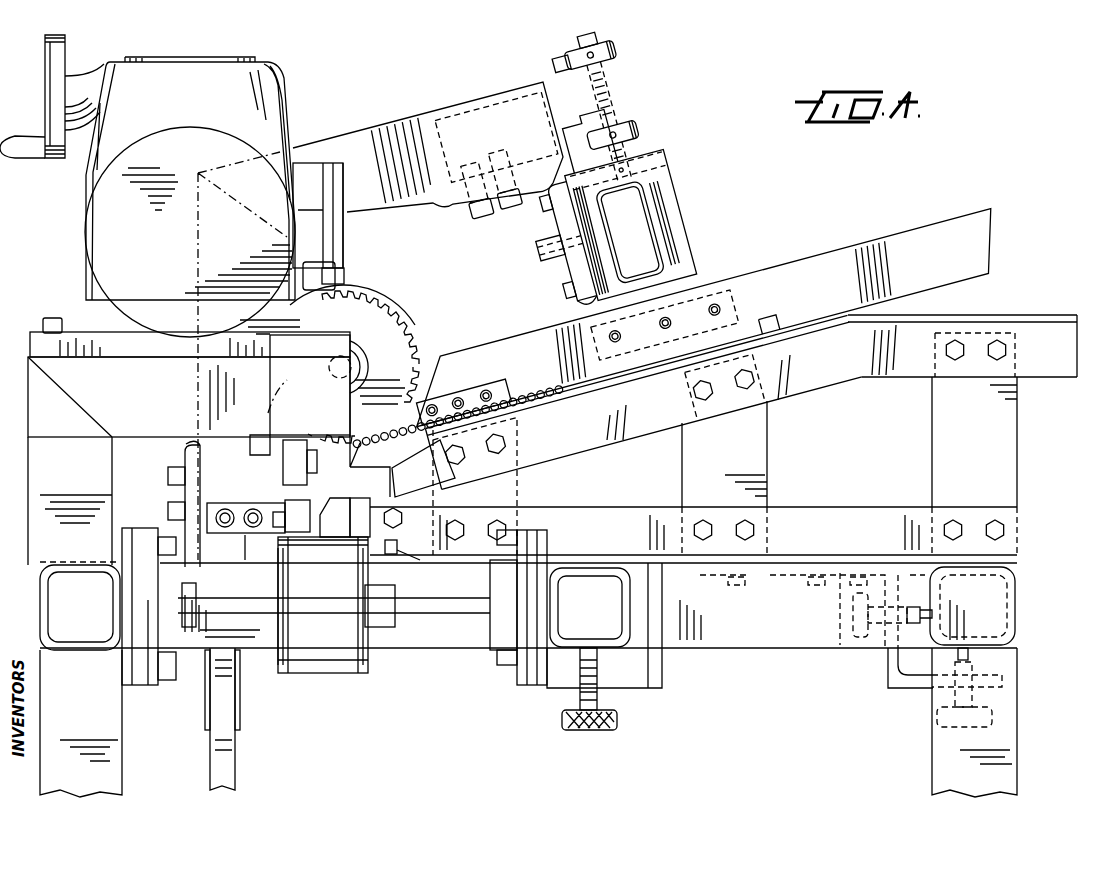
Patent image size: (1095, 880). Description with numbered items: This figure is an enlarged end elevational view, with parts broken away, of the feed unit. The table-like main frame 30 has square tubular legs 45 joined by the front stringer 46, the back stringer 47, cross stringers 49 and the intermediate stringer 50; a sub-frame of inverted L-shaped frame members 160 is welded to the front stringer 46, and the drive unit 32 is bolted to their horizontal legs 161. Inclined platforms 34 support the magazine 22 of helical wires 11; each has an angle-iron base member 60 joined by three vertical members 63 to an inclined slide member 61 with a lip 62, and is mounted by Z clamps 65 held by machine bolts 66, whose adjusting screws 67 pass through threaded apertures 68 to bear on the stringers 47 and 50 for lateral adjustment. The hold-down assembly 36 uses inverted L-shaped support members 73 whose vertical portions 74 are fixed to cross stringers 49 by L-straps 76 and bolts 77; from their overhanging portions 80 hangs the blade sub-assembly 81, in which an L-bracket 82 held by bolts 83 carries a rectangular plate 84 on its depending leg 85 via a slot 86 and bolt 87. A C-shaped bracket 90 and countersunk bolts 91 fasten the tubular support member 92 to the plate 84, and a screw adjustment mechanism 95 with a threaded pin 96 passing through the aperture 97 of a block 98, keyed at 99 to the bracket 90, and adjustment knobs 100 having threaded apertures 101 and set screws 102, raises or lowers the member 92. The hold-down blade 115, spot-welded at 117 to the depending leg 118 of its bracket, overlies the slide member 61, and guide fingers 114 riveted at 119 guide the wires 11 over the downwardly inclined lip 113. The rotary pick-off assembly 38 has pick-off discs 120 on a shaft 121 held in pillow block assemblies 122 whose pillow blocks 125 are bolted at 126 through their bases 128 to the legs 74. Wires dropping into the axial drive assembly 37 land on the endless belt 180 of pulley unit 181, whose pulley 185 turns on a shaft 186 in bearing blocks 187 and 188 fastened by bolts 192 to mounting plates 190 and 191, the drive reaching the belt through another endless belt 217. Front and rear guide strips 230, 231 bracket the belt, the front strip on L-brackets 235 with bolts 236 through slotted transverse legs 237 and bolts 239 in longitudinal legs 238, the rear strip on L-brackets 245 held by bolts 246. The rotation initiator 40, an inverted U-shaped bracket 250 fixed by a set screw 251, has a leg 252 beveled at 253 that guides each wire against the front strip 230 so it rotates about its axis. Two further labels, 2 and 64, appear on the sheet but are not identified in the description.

The boss 2 is at (40, 320).
The helical wires 11 is at (572, 390).
The magazine 22 is at (542, 344).
The main frame 30 is at (786, 660).
The drive unit 32 is at (294, 70).
The inclined platforms 34 is at (1028, 495).
The hold-down assembly 36 is at (366, 118).
The axial drive assembly 37 is at (386, 664).
The rotary pick-off assembly 38 is at (476, 324).
The rotation initiator 40 is at (332, 530).
The legs 45 is at (930, 754).
The front stringer 46 is at (68, 648).
The back stringer 47 is at (1000, 605).
The cross stringers 49 is at (262, 650).
The intermediate stringer 50 is at (630, 630).
The horizontal base member 60 is at (852, 505).
The inclined slide member 61 is at (626, 436).
The lip 62 is at (645, 378).
The vertical members 63 is at (765, 438).
The bolt 64 is at (950, 358).
The Z clamps 65 is at (644, 703).
The machine bolts 66 is at (770, 580).
The adjusting screws 67 is at (590, 728).
The internally threaded apertures 68 is at (578, 700).
The inverted L-shaped support members 73 is at (195, 262).
The vertically disposed portion 74 is at (200, 490).
The L-strap 76 is at (180, 458).
The machine bolts 77 is at (168, 477).
The overhanging portions 80 is at (422, 118).
The hold-down blade sub-assembly 81 is at (690, 150).
The L-bracket 82 is at (450, 212).
The machine bolts 83 is at (500, 215).
The rectangular plate 84 is at (605, 255).
The depending leg 85 is at (580, 282).
The vertically disposed slot 86 is at (566, 258).
The machine bolt 87 is at (548, 240).
The C-shaped bracket 90 is at (672, 236).
The countersunk machine bolts 91 is at (556, 210).
The elongated tubular support member 92 is at (668, 222).
The screw adjustment mechanism 95 is at (644, 56).
The threaded pin 96 is at (578, 44).
The non-threaded aperture 97 is at (615, 95).
The block 98 is at (588, 132).
The key 99 is at (655, 172).
The adjustment knobs 100 is at (612, 48).
The internally threaded apertures 101 is at (562, 62).
The set screws 102 is at (585, 52).
The downwardly inclined lip 113 is at (360, 432).
The guide fingers 114 is at (463, 390).
The hold-down blade 115 is at (825, 252).
The spot welds 117 is at (722, 302).
The depending legs 118 is at (712, 278).
The rivets 119 is at (492, 392).
The pick-off discs 120 is at (410, 325).
The rotatable shaft 121 is at (372, 362).
The pillow block assemblies 122 is at (350, 300).
The pillow block 125 is at (378, 318).
The machine bolts 126 is at (335, 272).
The base 128 is at (318, 255).
The inverted L-shaped frame members 160 is at (75, 469).
The horizontally extending legs 161 is at (140, 388).
The endless belt 180 is at (318, 676).
The pulley unit 181 is at (298, 700).
The pulley 185 is at (362, 676).
The shaft 186 is at (435, 630).
The bearing block 187 is at (182, 668).
The bearing block 188 is at (492, 660).
The mounting plate 190 is at (140, 690).
The mounting plate 191 is at (535, 535).
The machine bolts 192 is at (175, 700).
The endless belt 217 is at (212, 758).
The front guide strip 230 is at (296, 498).
The rear guide strip 231 is at (455, 465).
The L-brackets 235 is at (275, 508).
The machine bolts 236 is at (225, 508).
The transversely extending legs 237 is at (215, 532).
The longitudinally extending legs 238 is at (278, 545).
The machine bolts 239 is at (270, 532).
The L-brackets 245 is at (392, 538).
The machine bolts 246 is at (400, 556).
The inverted U-shaped bracket 250 is at (419, 484).
The set screw 251 is at (395, 512).
The leg 252 is at (338, 540).
The bevel 253 is at (327, 504).